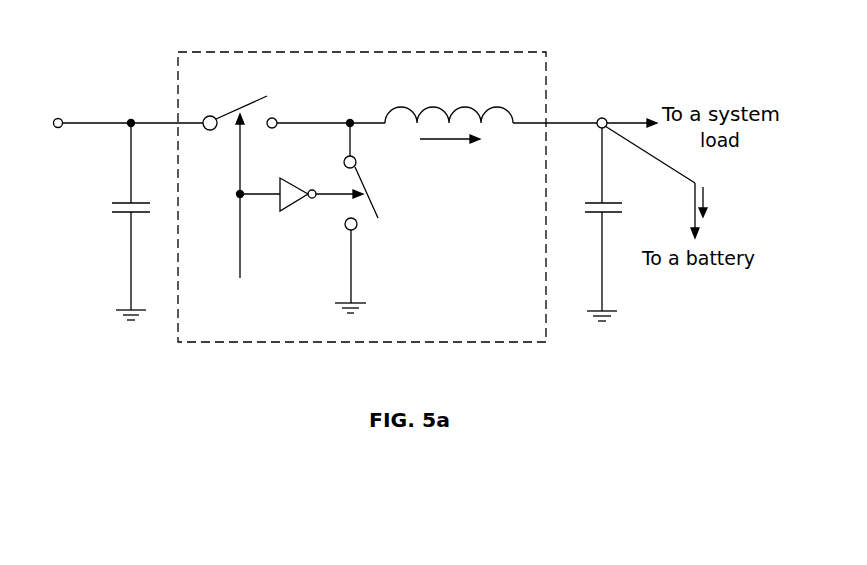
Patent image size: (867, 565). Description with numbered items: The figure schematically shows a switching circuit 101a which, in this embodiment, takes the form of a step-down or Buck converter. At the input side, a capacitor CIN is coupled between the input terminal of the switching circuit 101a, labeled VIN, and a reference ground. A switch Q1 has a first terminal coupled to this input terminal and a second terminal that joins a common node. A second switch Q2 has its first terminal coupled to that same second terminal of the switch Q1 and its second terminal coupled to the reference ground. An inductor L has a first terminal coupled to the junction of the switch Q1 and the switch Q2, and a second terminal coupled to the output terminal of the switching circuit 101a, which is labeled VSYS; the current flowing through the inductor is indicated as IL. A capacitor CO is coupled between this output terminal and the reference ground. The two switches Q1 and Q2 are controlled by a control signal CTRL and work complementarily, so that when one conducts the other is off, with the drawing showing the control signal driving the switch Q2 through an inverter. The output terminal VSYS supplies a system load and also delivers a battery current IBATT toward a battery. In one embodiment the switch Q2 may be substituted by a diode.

The switching circuit 101a is at (505, 52).
The switch Q1 is at (294, 101).
The switch Q2 is at (372, 218).
The inductor L is at (491, 99).
The inductor current IL is at (450, 153).
The control signal CTRL is at (290, 214).
The capacitor CIN is at (108, 221).
The capacitor CO is at (621, 224).
The input voltage node VIN is at (125, 109).
The system voltage node VSYS is at (614, 109).
The battery current IBATT is at (678, 182).